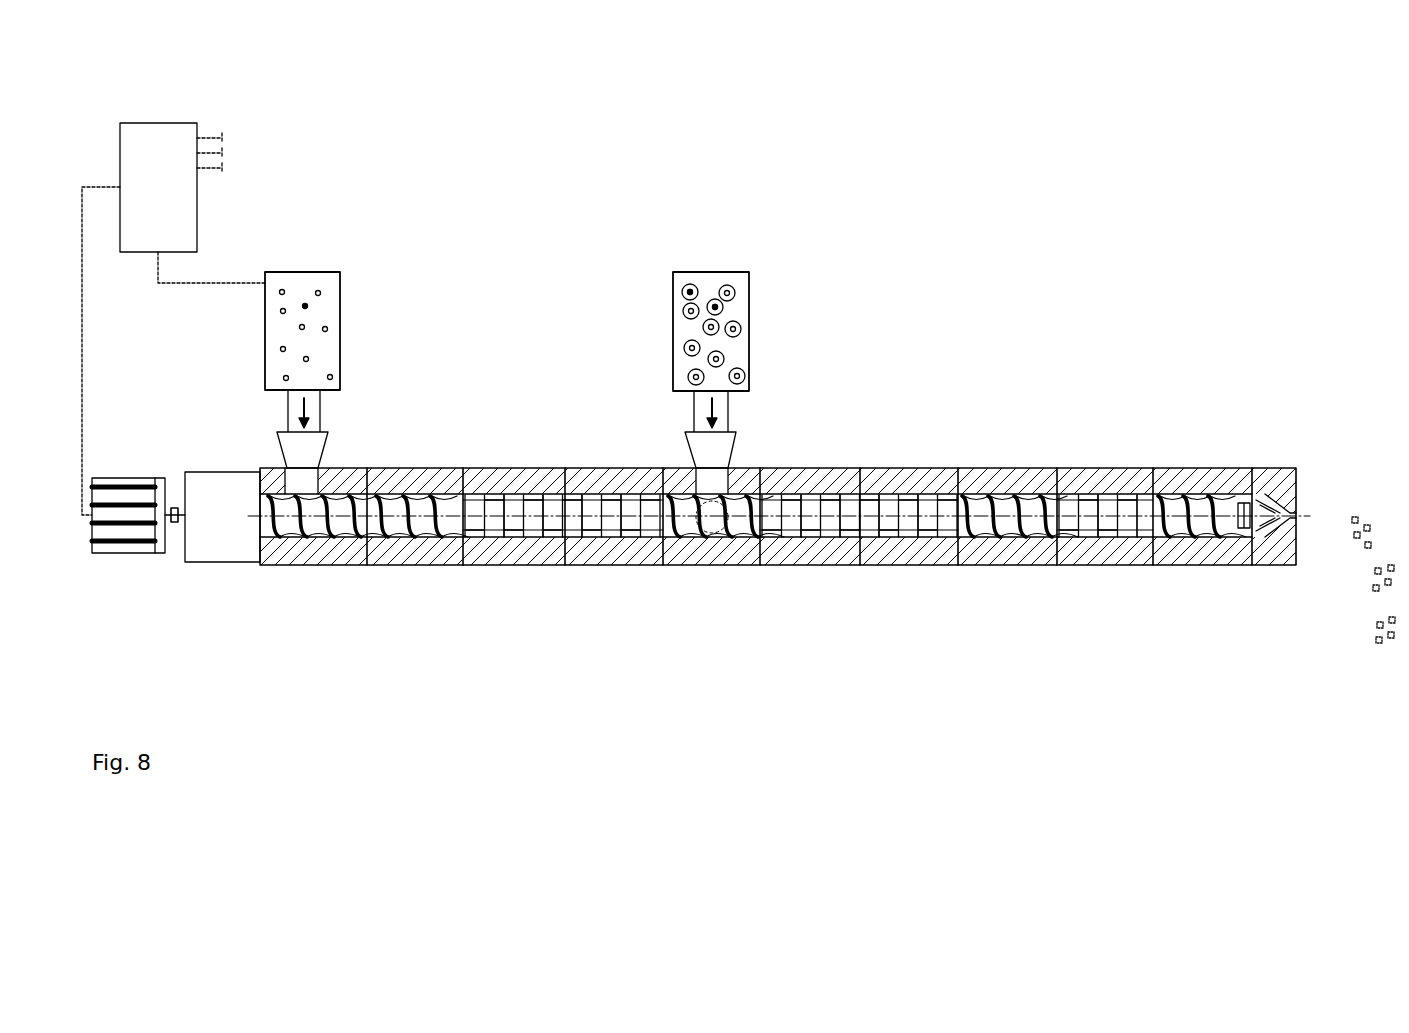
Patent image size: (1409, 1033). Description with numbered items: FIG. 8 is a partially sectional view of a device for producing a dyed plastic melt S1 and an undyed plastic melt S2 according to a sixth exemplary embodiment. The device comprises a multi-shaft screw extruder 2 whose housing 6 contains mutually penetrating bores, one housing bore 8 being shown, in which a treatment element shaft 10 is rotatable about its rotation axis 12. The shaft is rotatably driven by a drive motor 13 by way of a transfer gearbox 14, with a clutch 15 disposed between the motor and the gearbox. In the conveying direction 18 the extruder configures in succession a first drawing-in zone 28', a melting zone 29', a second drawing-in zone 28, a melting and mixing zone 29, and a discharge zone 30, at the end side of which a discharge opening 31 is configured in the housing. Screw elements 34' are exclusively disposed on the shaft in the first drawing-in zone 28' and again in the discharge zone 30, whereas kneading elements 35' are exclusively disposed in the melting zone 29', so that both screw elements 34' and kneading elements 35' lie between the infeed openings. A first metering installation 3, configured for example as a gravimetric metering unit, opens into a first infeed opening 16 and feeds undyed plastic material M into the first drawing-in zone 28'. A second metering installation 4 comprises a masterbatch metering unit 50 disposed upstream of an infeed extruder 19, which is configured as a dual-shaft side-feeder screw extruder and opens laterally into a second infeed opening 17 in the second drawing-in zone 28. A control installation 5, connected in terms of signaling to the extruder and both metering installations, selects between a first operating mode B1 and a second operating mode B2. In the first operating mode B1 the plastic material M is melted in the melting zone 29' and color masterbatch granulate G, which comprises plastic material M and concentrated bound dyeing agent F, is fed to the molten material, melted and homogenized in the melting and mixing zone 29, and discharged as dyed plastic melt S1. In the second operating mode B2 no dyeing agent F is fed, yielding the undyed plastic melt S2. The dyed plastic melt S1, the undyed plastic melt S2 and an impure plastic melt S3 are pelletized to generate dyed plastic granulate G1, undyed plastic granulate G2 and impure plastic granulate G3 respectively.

The multi-shaft screw extruder 2 is at (1079, 466).
The first metering installation 3 is at (311, 270).
The second metering installation 4 is at (737, 270).
The control installation 5 is at (197, 178).
The housing 6 is at (815, 468).
The housing bore 8 is at (975, 500).
The treatment element shaft 10 is at (519, 496).
The rotation axis 12 is at (1180, 508).
The drive motor 13 is at (116, 478).
The transfer gearbox 14 is at (233, 490).
The clutch 15 is at (174, 506).
The first infeed opening 16 is at (306, 500).
The second infeed opening 17 is at (765, 468).
The conveying direction 18 is at (470, 448).
The infeed extruder 19 is at (684, 432).
The second drawing-in zone 28 is at (711, 638).
The first drawing-in zone 28' is at (361, 638).
The melting and mixing zone 29 is at (956, 638).
The melting zone 29' is at (563, 638).
The discharge zone 30 is at (1296, 565).
The discharge opening 31 is at (1296, 515).
The screw elements 34' is at (757, 569).
The kneading elements 35' is at (808, 569).
The masterbatch metering unit 50 is at (681, 321).
The undyed plastic material M is at (305, 306).
The color masterbatch granulate G is at (690, 292).
The dyeing agent F is at (715, 307).
The first operating mode B1 is at (155, 159).
The second operating mode B2 is at (155, 224).
The dyed plastic melt S1 is at (1321, 542).
The undyed plastic melt S2 is at (1318, 594).
The impure plastic melt S3 is at (1321, 568).
The dyed plastic granulate G1 is at (1379, 643).
The undyed plastic granulate G2 is at (1355, 517).
The impure plastic granulate G3 is at (1378, 568).